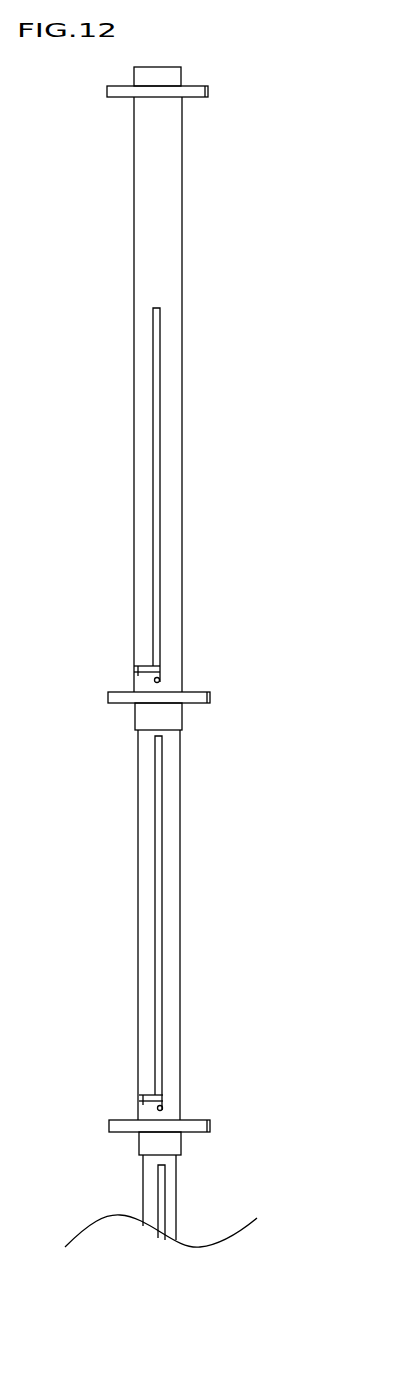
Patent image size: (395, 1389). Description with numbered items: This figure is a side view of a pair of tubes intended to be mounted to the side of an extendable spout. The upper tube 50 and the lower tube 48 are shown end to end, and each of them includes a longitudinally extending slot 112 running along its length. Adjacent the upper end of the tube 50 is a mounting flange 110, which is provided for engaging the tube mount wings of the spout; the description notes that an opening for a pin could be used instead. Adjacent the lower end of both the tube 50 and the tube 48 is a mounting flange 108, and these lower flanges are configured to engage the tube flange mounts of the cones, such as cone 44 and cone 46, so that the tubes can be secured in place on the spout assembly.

The mounting flange 110 is at (118, 88).
The tube 50 is at (134, 264).
The longitudinally extending slot 112 is at (155, 488).
The mounting flange 108 is at (108, 695).
The tube 48 is at (138, 857).
The cone 44 is at (128, 1095).
The cone 46 is at (161, 1202).